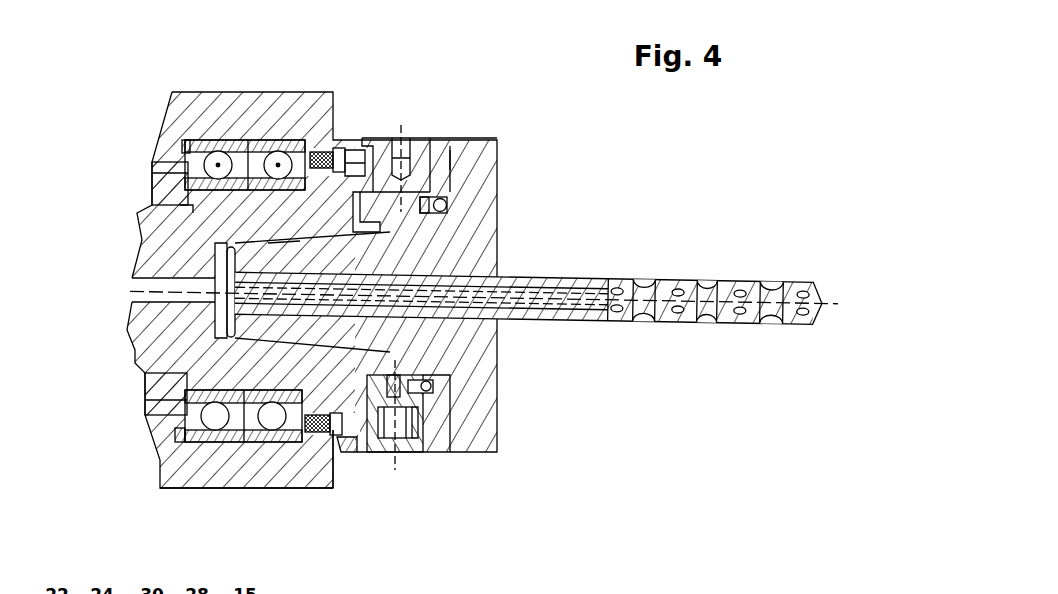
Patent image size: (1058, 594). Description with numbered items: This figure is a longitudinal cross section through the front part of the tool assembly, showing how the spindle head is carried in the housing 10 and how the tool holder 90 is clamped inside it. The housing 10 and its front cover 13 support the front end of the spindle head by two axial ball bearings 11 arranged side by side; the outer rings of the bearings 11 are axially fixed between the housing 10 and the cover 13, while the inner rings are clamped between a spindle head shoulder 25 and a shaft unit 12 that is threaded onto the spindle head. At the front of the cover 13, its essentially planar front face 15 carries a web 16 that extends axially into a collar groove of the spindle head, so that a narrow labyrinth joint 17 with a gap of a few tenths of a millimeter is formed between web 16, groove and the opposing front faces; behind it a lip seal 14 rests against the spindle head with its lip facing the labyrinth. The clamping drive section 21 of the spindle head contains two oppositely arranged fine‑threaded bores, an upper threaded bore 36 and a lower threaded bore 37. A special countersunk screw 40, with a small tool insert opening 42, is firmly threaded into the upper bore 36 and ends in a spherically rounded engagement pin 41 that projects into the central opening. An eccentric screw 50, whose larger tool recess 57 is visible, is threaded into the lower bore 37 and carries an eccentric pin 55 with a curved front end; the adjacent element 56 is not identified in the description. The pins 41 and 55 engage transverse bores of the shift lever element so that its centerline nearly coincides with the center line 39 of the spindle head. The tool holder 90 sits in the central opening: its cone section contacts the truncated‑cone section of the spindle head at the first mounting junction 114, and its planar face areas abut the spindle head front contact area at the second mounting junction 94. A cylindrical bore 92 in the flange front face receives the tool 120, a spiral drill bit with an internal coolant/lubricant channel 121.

The housing 10 is at (185, 462).
The axial ball bearings 11 is at (278, 165).
The shaft unit 12 is at (163, 187).
The cover 13 is at (307, 477).
The lip seal 14 is at (338, 150).
The front face 15 is at (338, 437).
The web 16 is at (350, 448).
The labyrinth joint 17 is at (362, 163).
The clamping drive section 21 is at (440, 132).
The spindle head shoulder 25 is at (320, 155).
The upper threaded bore 36 is at (422, 173).
The lower threaded bore 37 is at (425, 403).
The center line of the spindle head 39 is at (170, 290).
The special countersunk screw 40 is at (450, 160).
The engagement pin 41 is at (416, 205).
The tool insert opening 42 is at (404, 150).
The eccentric screw 50 is at (418, 412).
The eccentric pin 55 is at (440, 385).
The nut 56 is at (430, 447).
The tool recess 57 is at (402, 432).
The tool holder 90 is at (505, 329).
The cylindrical bore 92 is at (430, 242).
The second mounting junction 94 is at (470, 141).
The first mounting junction 114 is at (300, 345).
The tool 120 is at (657, 318).
The coolant/lubricant channel 121 is at (743, 316).